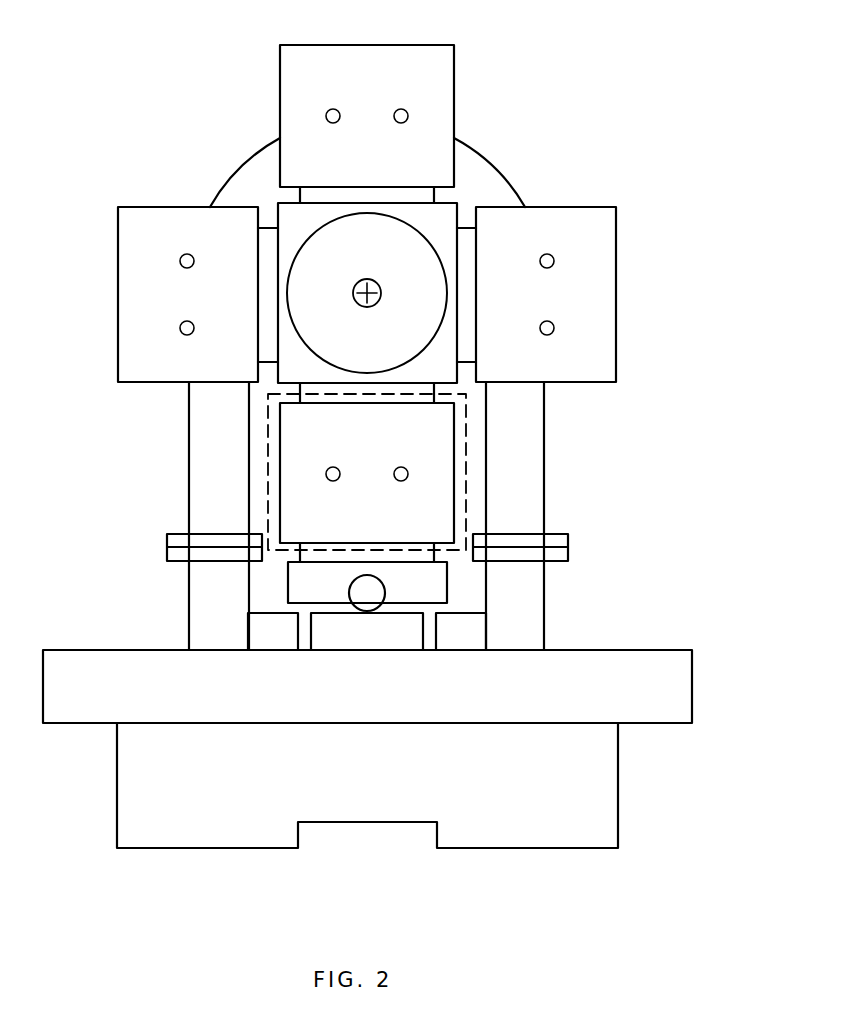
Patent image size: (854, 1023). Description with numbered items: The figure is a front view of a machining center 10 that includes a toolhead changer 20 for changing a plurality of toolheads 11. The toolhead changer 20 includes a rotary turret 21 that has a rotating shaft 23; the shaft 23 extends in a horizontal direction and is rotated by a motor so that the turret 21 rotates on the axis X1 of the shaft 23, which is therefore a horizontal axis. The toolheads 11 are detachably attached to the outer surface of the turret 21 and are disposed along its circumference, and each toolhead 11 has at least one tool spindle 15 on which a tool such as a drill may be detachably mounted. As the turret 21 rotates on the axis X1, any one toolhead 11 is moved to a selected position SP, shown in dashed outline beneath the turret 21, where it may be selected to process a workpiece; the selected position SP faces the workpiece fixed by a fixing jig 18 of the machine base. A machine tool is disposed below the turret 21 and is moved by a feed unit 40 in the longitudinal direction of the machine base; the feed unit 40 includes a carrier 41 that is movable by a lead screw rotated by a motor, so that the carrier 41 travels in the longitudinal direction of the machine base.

The machining center 10 is at (62, 39).
The toolhead 11 is at (130, 334).
The tool spindle 15 is at (325, 474).
The fixing jig 18 is at (685, 686).
The toolhead changer 20 is at (506, 146).
The rotary turret 21 is at (445, 215).
The rotating shaft 23 is at (381, 293).
The feed unit 40 is at (445, 606).
The carrier 41 is at (441, 589).
The selected position SP is at (466, 457).
The axis X1 is at (360, 288).